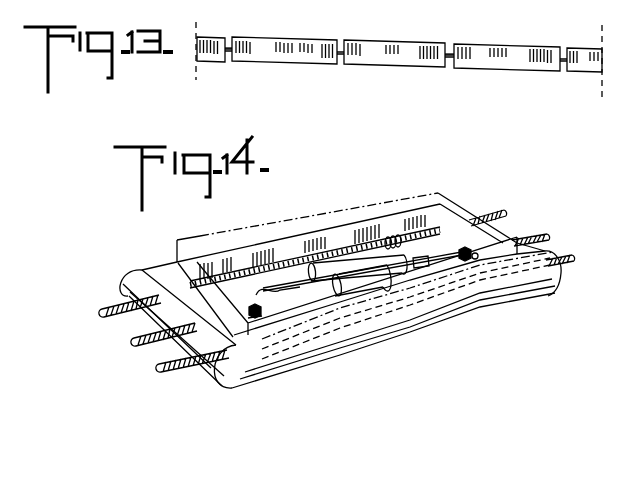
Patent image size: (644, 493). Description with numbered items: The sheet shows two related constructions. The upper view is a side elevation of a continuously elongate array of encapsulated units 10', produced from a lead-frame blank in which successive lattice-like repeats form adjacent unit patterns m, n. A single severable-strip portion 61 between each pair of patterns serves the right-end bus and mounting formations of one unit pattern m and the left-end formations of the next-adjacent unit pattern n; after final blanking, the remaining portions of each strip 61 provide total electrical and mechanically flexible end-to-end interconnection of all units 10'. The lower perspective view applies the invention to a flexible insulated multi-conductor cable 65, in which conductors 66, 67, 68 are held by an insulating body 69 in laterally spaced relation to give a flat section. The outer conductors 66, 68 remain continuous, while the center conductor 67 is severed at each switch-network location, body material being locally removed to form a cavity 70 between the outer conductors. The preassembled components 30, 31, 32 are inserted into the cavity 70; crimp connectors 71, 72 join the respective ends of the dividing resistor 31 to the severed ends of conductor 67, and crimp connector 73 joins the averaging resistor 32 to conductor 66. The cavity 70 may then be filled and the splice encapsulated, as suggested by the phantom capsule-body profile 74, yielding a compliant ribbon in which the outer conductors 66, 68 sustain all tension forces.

In FIG. 13, the encapsulated unit 10' is at (399, 72).
In FIG. 13, the severable-strip portion 61 is at (337, 64).
In FIG. 13, the unit pattern m is at (252, 65).
In FIG. 13, the next-adjacent unit pattern n is at (423, 67).
In FIG. 14, the flexible insulated multi-conductor cable 65 is at (535, 305).
In FIG. 14, the capsule-body profile 74 is at (298, 218).
In FIG. 14, the averaging resistor 32 is at (325, 262).
In FIG. 14, the crimp connector 72 is at (447, 287).
In FIG. 14, the circuit component 30 is at (333, 287).
In FIG. 14, the dividing resistor 31 is at (367, 287).
In FIG. 14, the crimp connector 73 is at (390, 237).
In FIG. 14, the cavity 70 is at (438, 250).
In FIG. 14, the crimp connector 71 is at (270, 318).
In FIG. 14, the outer conductor 66 is at (121, 306).
In FIG. 14, the center conductor 67 is at (137, 338).
In FIG. 14, the outer conductor 68 is at (181, 372).
In FIG. 14, the insulating body 69 is at (180, 348).